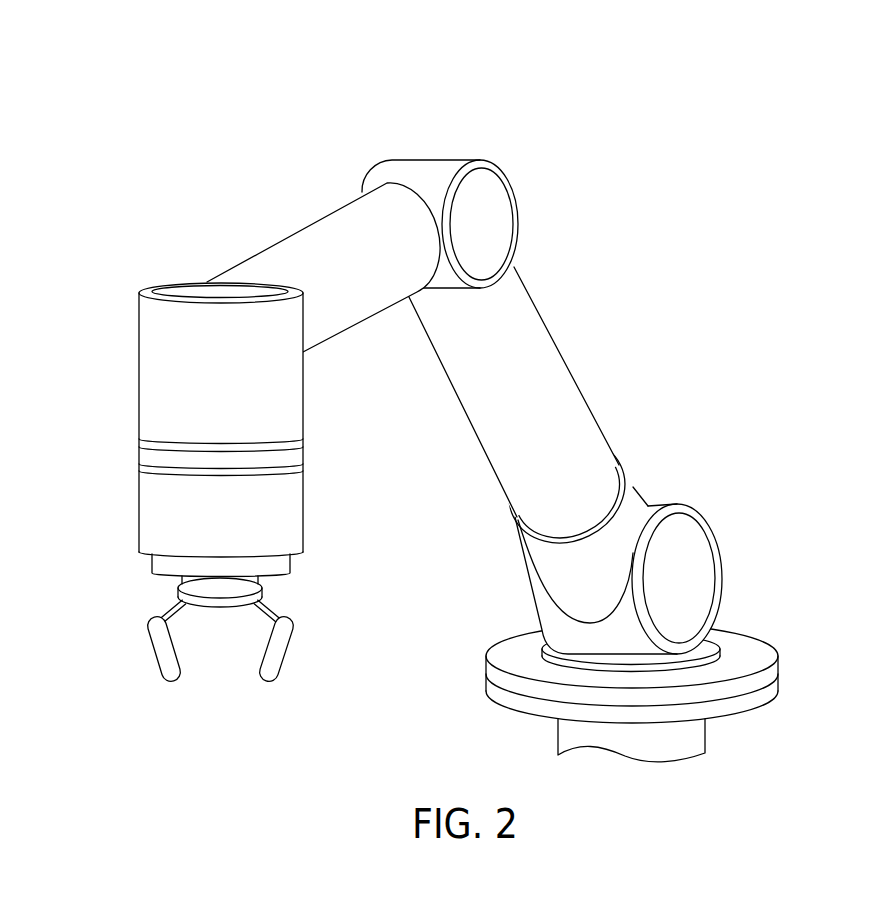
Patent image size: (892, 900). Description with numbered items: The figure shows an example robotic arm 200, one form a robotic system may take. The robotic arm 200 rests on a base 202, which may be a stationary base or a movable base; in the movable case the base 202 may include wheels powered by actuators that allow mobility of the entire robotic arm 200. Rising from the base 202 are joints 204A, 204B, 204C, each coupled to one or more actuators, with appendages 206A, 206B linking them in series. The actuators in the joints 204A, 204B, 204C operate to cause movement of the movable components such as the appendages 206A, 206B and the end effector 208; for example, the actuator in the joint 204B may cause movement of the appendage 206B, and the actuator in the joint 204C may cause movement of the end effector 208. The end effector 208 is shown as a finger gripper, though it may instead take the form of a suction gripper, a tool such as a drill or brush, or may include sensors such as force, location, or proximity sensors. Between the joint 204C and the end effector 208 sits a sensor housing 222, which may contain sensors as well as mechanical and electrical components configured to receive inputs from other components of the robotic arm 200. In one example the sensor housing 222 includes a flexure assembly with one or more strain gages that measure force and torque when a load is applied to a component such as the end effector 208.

The robotic arm 200 is at (145, 94).
The base 202 is at (747, 643).
The joint 204A is at (685, 560).
The joint 204B is at (488, 212).
The joint 204C is at (168, 380).
The appendage 206A is at (552, 392).
The appendage 206B is at (308, 242).
The end effector 208 is at (285, 642).
The sensor housing 222 is at (158, 530).